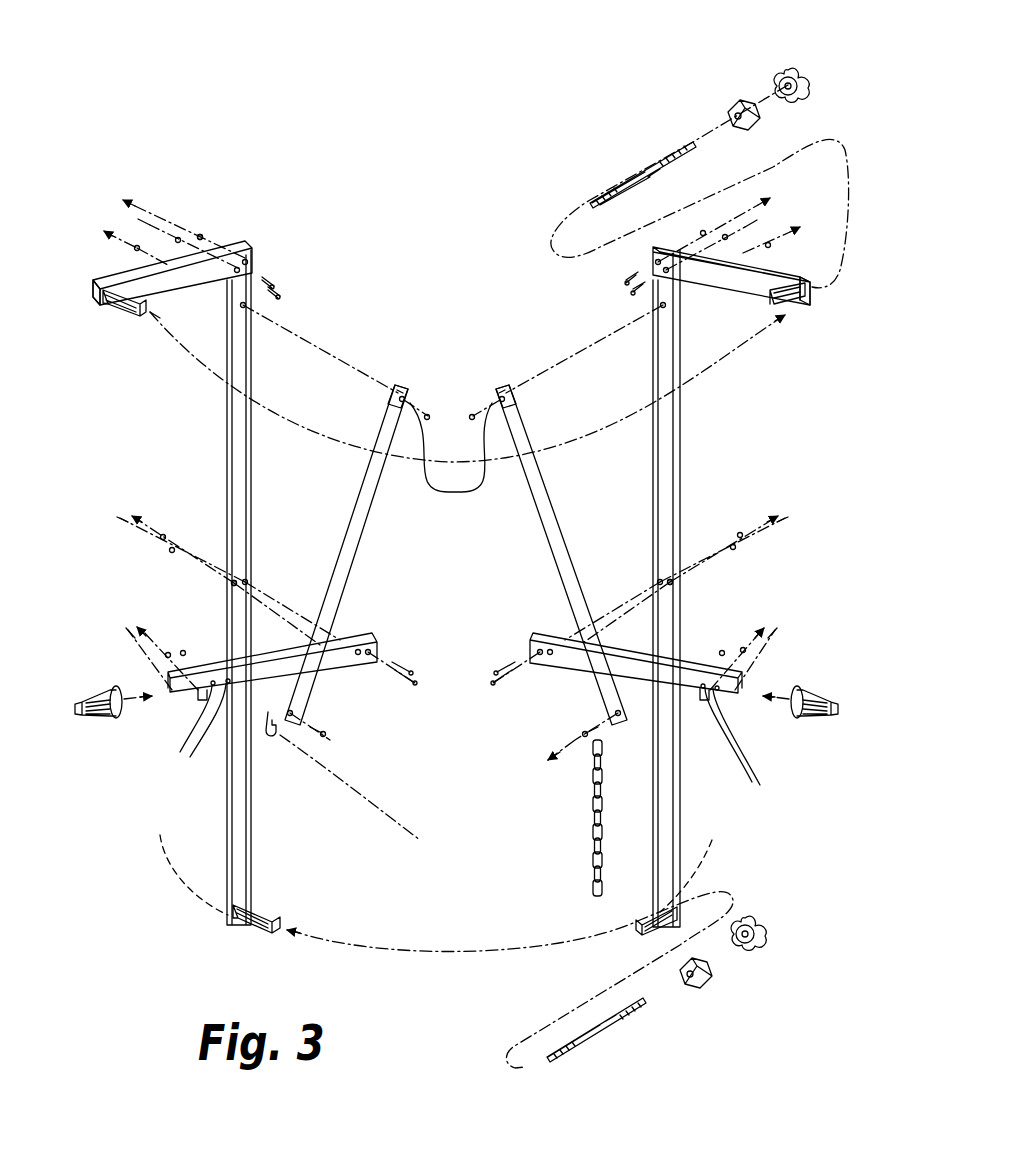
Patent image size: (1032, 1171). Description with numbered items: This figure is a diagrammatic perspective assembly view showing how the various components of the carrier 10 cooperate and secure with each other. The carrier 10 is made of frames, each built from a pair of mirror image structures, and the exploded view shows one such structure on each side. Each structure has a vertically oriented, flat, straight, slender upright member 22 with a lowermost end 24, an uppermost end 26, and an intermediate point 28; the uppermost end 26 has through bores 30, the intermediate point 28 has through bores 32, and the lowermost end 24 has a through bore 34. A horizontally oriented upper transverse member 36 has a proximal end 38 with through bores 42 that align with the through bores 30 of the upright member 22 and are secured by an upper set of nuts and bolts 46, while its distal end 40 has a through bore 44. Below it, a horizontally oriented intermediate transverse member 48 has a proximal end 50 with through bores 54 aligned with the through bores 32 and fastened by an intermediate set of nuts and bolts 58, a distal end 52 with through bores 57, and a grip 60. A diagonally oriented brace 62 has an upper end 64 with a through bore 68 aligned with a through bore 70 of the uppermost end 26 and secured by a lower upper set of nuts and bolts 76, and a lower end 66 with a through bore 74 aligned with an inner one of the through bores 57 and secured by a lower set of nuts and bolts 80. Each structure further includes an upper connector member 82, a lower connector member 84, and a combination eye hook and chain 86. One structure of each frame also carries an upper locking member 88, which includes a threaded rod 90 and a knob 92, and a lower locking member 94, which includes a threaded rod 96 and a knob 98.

The carrier 10 is at (252, 242).
The upright member 22 is at (226, 420).
The lowermost end 24 is at (245, 932).
The uppermost end 26 is at (660, 275).
The intermediate point 28 is at (230, 585).
The through bores 30 is at (255, 260).
The through bores 32 is at (248, 578).
The through bore 34 is at (436, 863).
The upper transverse member 36 is at (175, 240).
The proximal end 38 is at (243, 258).
The distal end 40 is at (97, 296).
The through bores 42 is at (268, 272).
The through bore 44 is at (95, 287).
The upper set of nuts and bolts 46 is at (200, 233).
The intermediate transverse member 48 is at (548, 677).
The proximal end 50 is at (535, 642).
The distal end 52 is at (165, 680).
The through bores 54 is at (538, 652).
The through bores 57 is at (190, 752).
The intermediate set of nuts and bolts 58 is at (174, 548).
The grip 60 is at (88, 716).
The brace 62 is at (547, 511).
The upper end 64 is at (505, 385).
The lower end 66 is at (285, 735).
The through bore 68 is at (492, 485).
The through bore 70 is at (242, 310).
The through bore 74 is at (296, 713).
The lower upper set of nuts and bolts 76 is at (472, 415).
The lower set of nuts and bolts 80 is at (328, 736).
The upper connector member 82 is at (120, 316).
The lower connector member 84 is at (647, 914).
The combination eye hook and chain 86 is at (272, 750).
The upper locking member 88 is at (786, 62).
The threaded rod 90 is at (640, 167).
The knob 92 is at (775, 98).
The lower locking member 94 is at (760, 958).
The threaded rod 96 is at (612, 1022).
The knob 98 is at (748, 920).